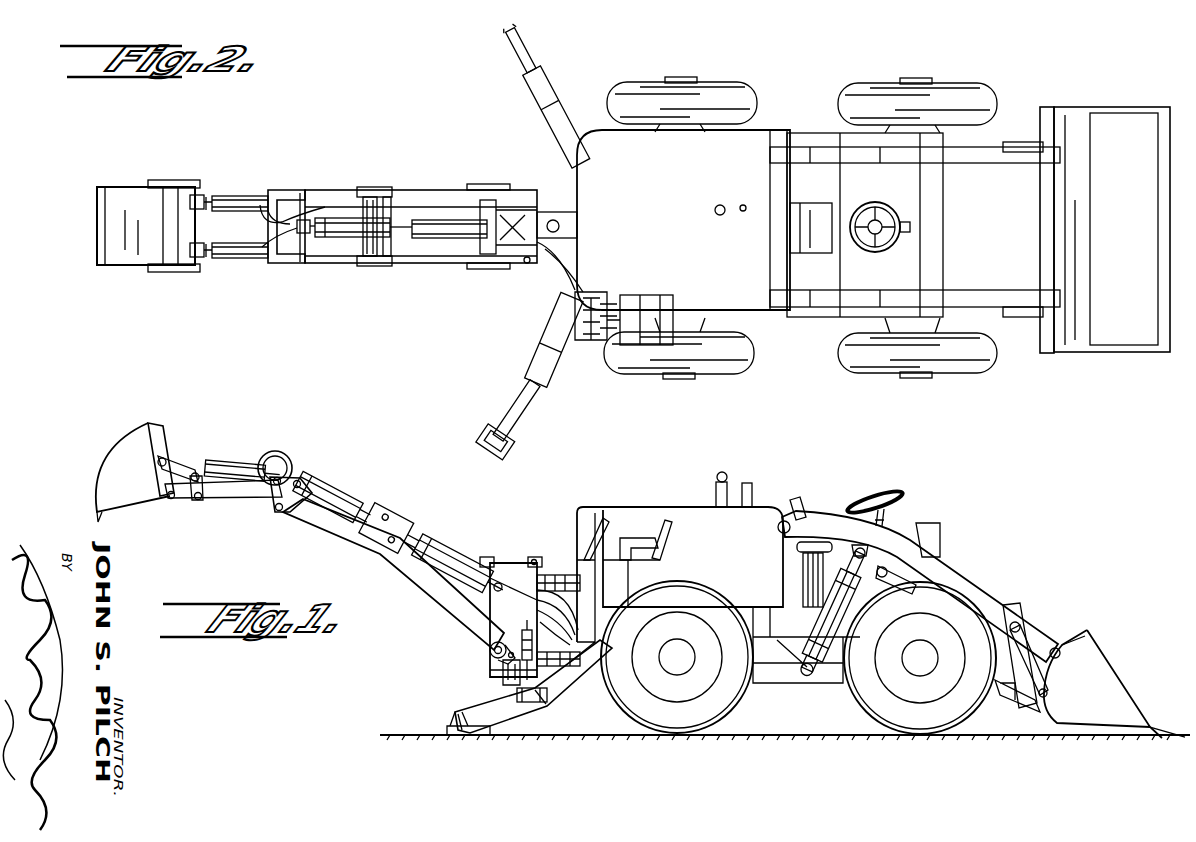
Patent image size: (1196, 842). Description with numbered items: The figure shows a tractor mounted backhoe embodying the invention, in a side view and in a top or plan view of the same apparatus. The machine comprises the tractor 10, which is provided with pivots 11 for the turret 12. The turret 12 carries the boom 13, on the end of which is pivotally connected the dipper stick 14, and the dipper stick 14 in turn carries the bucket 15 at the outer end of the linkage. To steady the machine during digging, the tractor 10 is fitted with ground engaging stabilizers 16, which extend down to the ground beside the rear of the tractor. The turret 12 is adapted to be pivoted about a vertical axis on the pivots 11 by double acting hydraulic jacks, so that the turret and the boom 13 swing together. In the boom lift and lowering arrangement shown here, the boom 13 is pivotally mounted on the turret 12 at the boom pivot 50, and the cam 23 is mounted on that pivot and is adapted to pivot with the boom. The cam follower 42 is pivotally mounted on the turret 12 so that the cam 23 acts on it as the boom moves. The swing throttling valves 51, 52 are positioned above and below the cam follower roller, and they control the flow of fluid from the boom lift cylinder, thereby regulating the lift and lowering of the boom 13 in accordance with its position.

In FIG. 2, the tractor 10 is at (700, 247).
In FIG. 1, the tractor 10 is at (680, 510).
In FIG. 2, the pivots 11 is at (565, 212).
In FIG. 1, the pivots 11 is at (560, 575).
In FIG. 1, the turret 12 is at (516, 585).
In FIG. 2, the boom 13 is at (445, 192).
In FIG. 1, the boom 13 is at (447, 600).
In FIG. 1, the dipper stick 14 is at (229, 495).
In FIG. 2, the bucket 15 is at (112, 195).
In FIG. 1, the bucket 15 is at (130, 447).
In FIG. 2, the ground engaging stabilizers 16 is at (548, 78).
In FIG. 1, the ground engaging stabilizers 16 is at (518, 713).
In FIG. 1, the cam 23 is at (488, 641).
In FIG. 1, the cam follower 42 is at (503, 670).
In FIG. 1, the boom pivot 50 is at (492, 655).
In FIG. 1, the swing throttling valve 51 is at (520, 632).
In FIG. 1, the swing throttling valve 52 is at (515, 690).